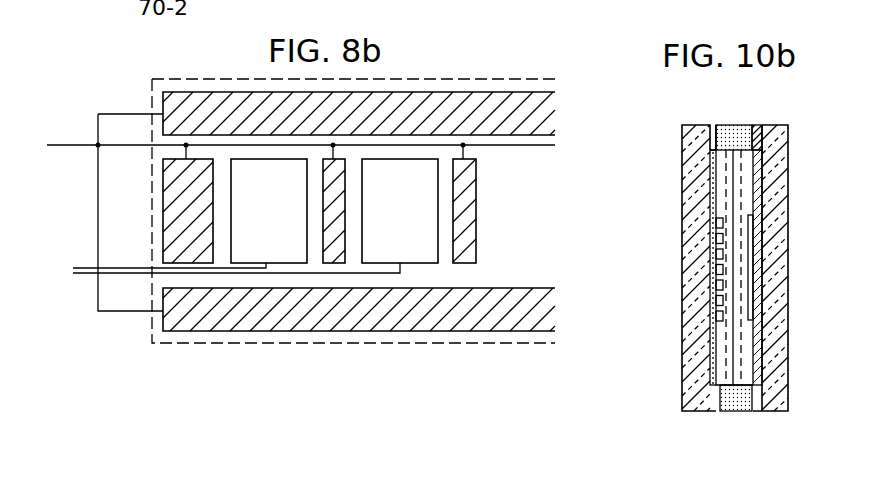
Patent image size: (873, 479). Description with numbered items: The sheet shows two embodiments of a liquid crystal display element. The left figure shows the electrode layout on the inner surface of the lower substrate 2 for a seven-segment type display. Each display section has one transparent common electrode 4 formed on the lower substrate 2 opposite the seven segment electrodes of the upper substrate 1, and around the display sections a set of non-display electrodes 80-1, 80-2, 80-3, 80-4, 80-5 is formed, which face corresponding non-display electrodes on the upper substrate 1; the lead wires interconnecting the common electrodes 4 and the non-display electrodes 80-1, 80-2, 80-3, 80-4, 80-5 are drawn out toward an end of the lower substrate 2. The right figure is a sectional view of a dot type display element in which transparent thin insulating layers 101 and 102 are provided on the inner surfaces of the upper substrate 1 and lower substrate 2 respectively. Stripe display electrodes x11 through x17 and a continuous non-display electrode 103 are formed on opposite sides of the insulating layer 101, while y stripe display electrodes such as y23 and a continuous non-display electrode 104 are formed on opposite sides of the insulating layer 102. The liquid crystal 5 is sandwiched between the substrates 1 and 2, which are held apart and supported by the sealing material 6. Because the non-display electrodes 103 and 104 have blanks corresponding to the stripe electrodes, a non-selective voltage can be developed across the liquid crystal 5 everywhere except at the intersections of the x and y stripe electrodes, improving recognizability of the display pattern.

In FIG. 8b, the non-display electrode 80-1 is at (208, 102).
In FIG. 8b, the non-display electrode 80-2 is at (185, 321).
In FIG. 8b, the non-display electrode 80-3 is at (167, 200).
In FIG. 8b, the non-display electrode 80-4 is at (337, 263).
In FIG. 8b, the non-display electrode 80-5 is at (465, 258).
In FIG. 8b, the common electrode 4 is at (284, 257).
In FIG. 8b, the lower substrate 2 is at (523, 343).
In FIG. 10b, the lower substrate 2 is at (788, 146).
In FIG. 10b, the upper substrate 1 is at (683, 143).
In FIG. 10b, the insulating layer 101 is at (716, 128).
In FIG. 10b, the insulating layer 102 is at (757, 128).
In FIG. 10b, the continuous non-display electrode 103 is at (715, 190).
In FIG. 10b, the continuous non-display electrode 104 is at (764, 180).
In FIG. 10b, the liquid crystal 5 is at (737, 363).
In FIG. 10b, the sealing material 6 is at (737, 408).
In FIG. 10b, the stripe display electrode x11 is at (716, 232).
In FIG. 10b, the stripe display electrode x17 is at (716, 325).
In FIG. 10b, the y stripe display electrode y23 is at (745, 268).